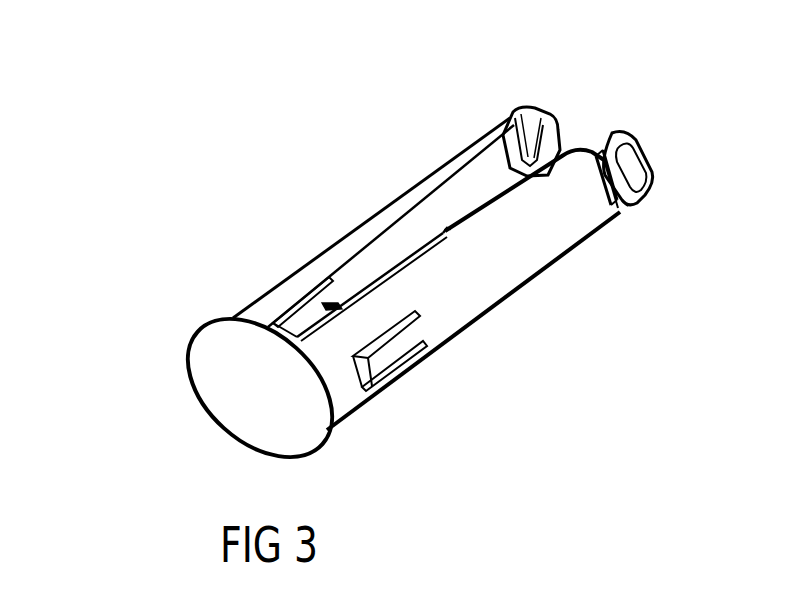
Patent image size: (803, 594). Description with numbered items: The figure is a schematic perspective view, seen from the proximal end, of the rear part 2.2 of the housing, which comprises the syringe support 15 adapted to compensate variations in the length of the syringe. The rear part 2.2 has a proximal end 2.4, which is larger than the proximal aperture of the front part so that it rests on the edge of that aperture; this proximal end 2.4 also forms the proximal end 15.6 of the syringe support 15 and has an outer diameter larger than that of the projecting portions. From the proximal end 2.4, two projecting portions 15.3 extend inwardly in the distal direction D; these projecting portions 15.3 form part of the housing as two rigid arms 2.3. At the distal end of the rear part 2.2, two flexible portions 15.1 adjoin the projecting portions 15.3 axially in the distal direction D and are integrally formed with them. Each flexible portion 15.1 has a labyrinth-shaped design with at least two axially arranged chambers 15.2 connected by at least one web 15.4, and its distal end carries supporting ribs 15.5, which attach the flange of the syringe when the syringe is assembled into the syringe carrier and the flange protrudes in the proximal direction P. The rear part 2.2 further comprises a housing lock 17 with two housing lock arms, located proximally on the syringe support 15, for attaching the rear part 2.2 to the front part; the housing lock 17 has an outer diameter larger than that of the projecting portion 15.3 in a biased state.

The rear part 2.2 is at (235, 292).
The rigid arms 2.3 is at (416, 253).
The projecting portions 15.3 is at (382, 238).
The proximal end 2.4 is at (192, 388).
The proximal end 15.6 is at (222, 400).
The syringe support 15 is at (662, 137).
The flexible portions 15.1 is at (522, 108).
The chambers 15.2 is at (518, 111).
The web 15.4 is at (627, 203).
The supporting ribs 15.5 is at (652, 177).
The housing lock 17 is at (315, 312).
The proximal direction P is at (169, 479).
The distal direction D is at (649, 69).